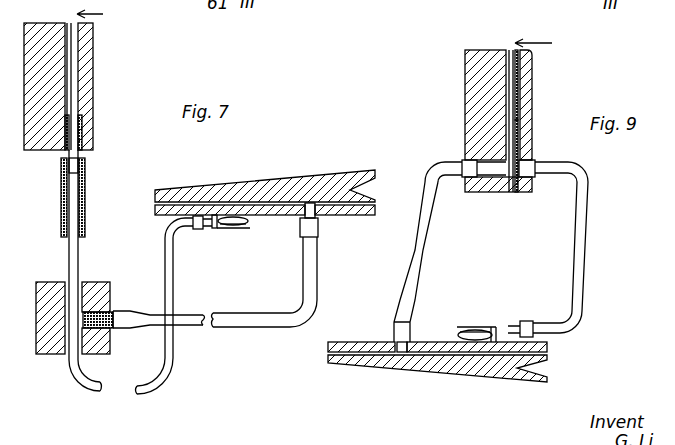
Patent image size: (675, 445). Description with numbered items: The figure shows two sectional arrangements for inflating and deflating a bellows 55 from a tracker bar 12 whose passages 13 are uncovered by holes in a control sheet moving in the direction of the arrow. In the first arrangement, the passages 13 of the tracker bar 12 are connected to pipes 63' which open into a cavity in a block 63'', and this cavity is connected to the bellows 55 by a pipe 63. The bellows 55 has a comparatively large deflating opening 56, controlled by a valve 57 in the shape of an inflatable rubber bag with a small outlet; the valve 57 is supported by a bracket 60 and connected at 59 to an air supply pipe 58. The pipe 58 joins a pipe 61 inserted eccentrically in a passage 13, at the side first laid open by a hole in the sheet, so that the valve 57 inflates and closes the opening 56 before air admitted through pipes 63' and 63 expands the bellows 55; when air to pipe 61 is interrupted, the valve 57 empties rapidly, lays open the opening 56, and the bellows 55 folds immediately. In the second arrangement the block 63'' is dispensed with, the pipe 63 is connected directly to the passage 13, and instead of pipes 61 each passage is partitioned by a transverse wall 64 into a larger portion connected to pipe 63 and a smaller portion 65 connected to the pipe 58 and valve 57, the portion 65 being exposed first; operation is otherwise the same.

In FIG. 7, the tracker bar 12 is at (88, 92).
In FIG. 9, the tracker bar 12 is at (470, 98).
In FIG. 7, the passage 13 is at (68, 68).
In FIG. 9, the passage 13 is at (510, 68).
In FIG. 7, the bellows 55 is at (293, 178).
In FIG. 9, the bellows 55 is at (423, 370).
In FIG. 7, the opening 56 is at (237, 208).
In FIG. 9, the opening 56 is at (472, 350).
In FIG. 7, the valve 57 is at (235, 228).
In FIG. 9, the valve 57 is at (472, 330).
In FIG. 7, the air supply pipe 58 is at (173, 277).
In FIG. 9, the air supply pipe 58 is at (578, 265).
In FIG. 7, the connection 59 is at (200, 229).
In FIG. 9, the connection 59 is at (513, 323).
In FIG. 7, the bracket 60 is at (248, 228).
In FIG. 9, the bracket 60 is at (460, 326).
In FIG. 7, the pipe 61 is at (78, 108).
In FIG. 7, the pipe 63 is at (200, 279).
In FIG. 9, the pipe 63 is at (450, 238).
In FIG. 7, the pipe 63' is at (55, 207).
In FIG. 7, the block 63'' is at (71, 333).
In FIG. 9, the transverse wall 64 is at (519, 88).
In FIG. 9, the passage portion 65 is at (520, 125).